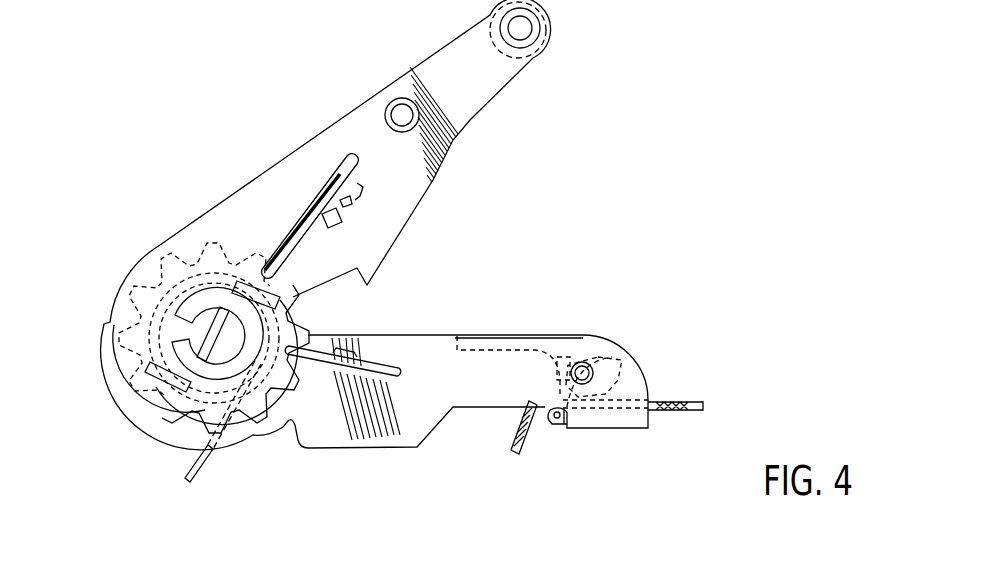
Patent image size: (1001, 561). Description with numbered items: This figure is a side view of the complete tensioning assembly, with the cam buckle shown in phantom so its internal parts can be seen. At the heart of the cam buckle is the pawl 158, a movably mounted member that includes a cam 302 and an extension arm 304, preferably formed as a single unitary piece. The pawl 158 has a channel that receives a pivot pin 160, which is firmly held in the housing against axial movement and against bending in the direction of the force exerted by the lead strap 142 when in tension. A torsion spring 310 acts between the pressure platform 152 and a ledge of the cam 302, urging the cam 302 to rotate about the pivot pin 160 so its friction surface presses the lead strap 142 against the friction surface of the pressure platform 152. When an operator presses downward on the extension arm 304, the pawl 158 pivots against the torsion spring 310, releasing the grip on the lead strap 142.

The lead strap 142 is at (703, 406).
The pressure platform 152 is at (548, 427).
The pawl 158 is at (573, 334).
The pivot pin 160 is at (587, 367).
The cam 302 is at (612, 357).
The extension arm 304 is at (489, 333).
The torsion spring 310 is at (570, 413).